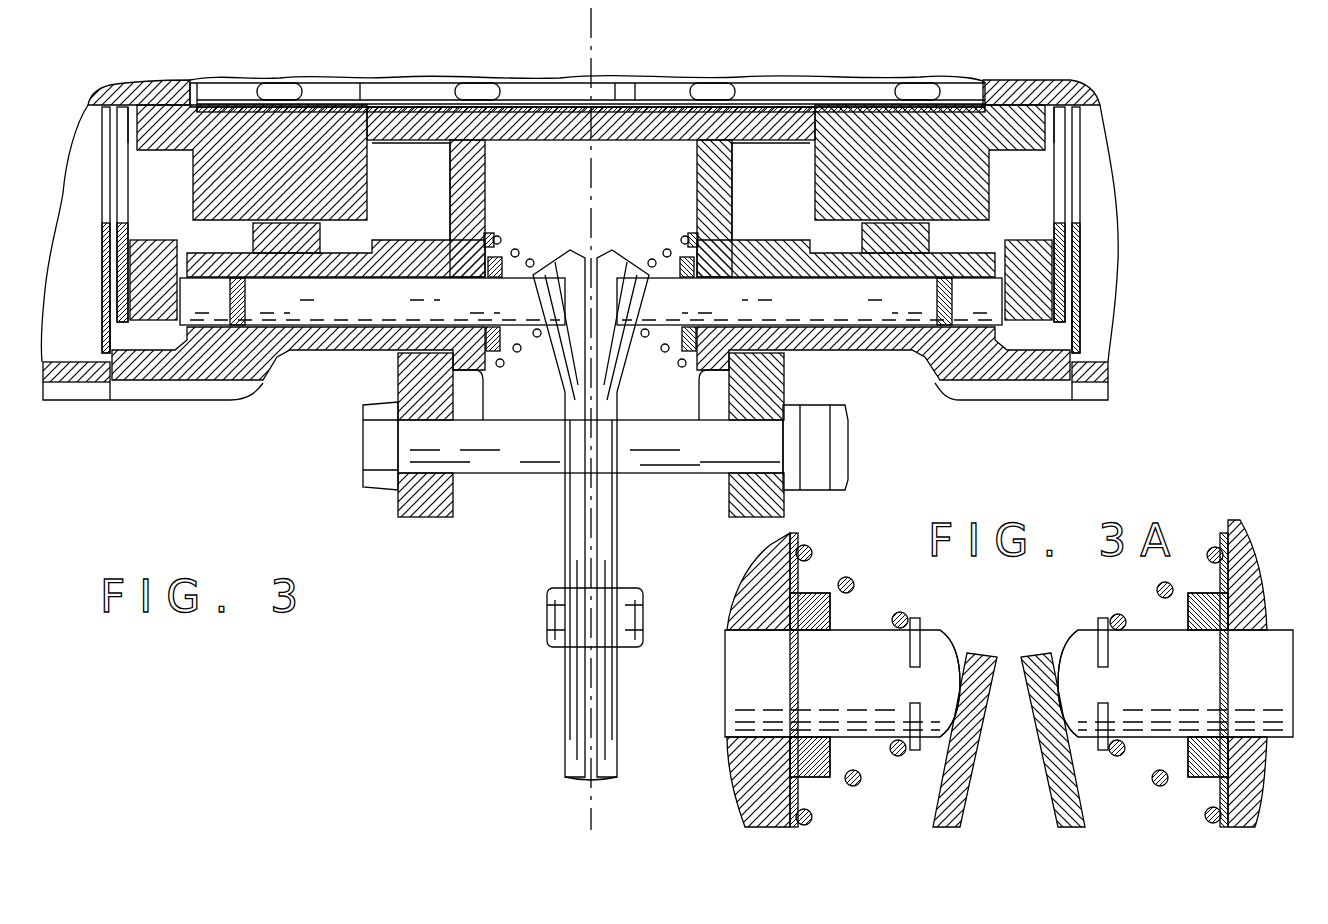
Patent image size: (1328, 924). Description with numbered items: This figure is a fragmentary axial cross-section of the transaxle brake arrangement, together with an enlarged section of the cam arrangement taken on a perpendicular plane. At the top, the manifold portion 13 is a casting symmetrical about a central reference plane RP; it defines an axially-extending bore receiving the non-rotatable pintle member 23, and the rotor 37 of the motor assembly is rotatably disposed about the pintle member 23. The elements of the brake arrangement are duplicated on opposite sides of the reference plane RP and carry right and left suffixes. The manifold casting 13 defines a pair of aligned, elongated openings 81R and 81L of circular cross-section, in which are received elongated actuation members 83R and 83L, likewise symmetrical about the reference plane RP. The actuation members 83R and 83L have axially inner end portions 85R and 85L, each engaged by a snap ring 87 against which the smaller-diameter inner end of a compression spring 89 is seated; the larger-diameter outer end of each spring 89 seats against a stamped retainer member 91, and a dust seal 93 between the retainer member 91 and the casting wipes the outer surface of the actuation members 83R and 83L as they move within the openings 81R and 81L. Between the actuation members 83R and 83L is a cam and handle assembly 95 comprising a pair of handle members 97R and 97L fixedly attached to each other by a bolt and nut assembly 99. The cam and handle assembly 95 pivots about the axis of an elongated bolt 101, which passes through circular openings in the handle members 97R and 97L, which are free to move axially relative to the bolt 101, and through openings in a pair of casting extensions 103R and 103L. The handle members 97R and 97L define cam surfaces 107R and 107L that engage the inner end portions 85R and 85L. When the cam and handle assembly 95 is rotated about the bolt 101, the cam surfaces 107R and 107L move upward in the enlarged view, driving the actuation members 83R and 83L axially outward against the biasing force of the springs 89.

In FIG. 3, the manifold portion 13 is at (520, 112).
In FIG. 3, the pintle member 23 is at (778, 90).
In FIG. 3, the rotor 37 is at (965, 170).
In FIG. 3, the central reference plane RP is at (591, 62).
In FIG. 3, the compression spring 89 is at (518, 250).
In FIG. 3A, the compression spring 89 is at (845, 582).
In FIG. 3, the actuation member 83L is at (372, 301).
In FIG. 3A, the actuation member 83L is at (842, 683).
In FIG. 3, the actuation member 83R is at (809, 301).
In FIG. 3A, the actuation member 83R is at (1175, 683).
In FIG. 3, the elongated opening 81L is at (295, 325).
In FIG. 3, the elongated opening 81R is at (890, 325).
In FIG. 3, the casting extension 103L is at (455, 398).
In FIG. 3, the casting extension 103R is at (728, 398).
In FIG. 3, the elongated bolt 101 is at (535, 450).
In FIG. 3, the cam and handle assembly 95 is at (571, 515).
In FIG. 3, the handle member 97L is at (565, 540).
In FIG. 3, the handle member 97R is at (620, 540).
In FIG. 3, the bolt and nut assembly 99 is at (548, 610).
In FIG. 3A, the snap ring 87 is at (916, 622).
In FIG. 3A, the axially inner end portion 85L is at (948, 640).
In FIG. 3A, the axially inner end portion 85R is at (1068, 648).
In FIG. 3A, the retainer member 91 is at (830, 612).
In FIG. 3A, the dust seal 93 is at (806, 740).
In FIG. 3A, the cam surface 107L is at (935, 785).
In FIG. 3A, the cam surface 107R is at (1080, 785).